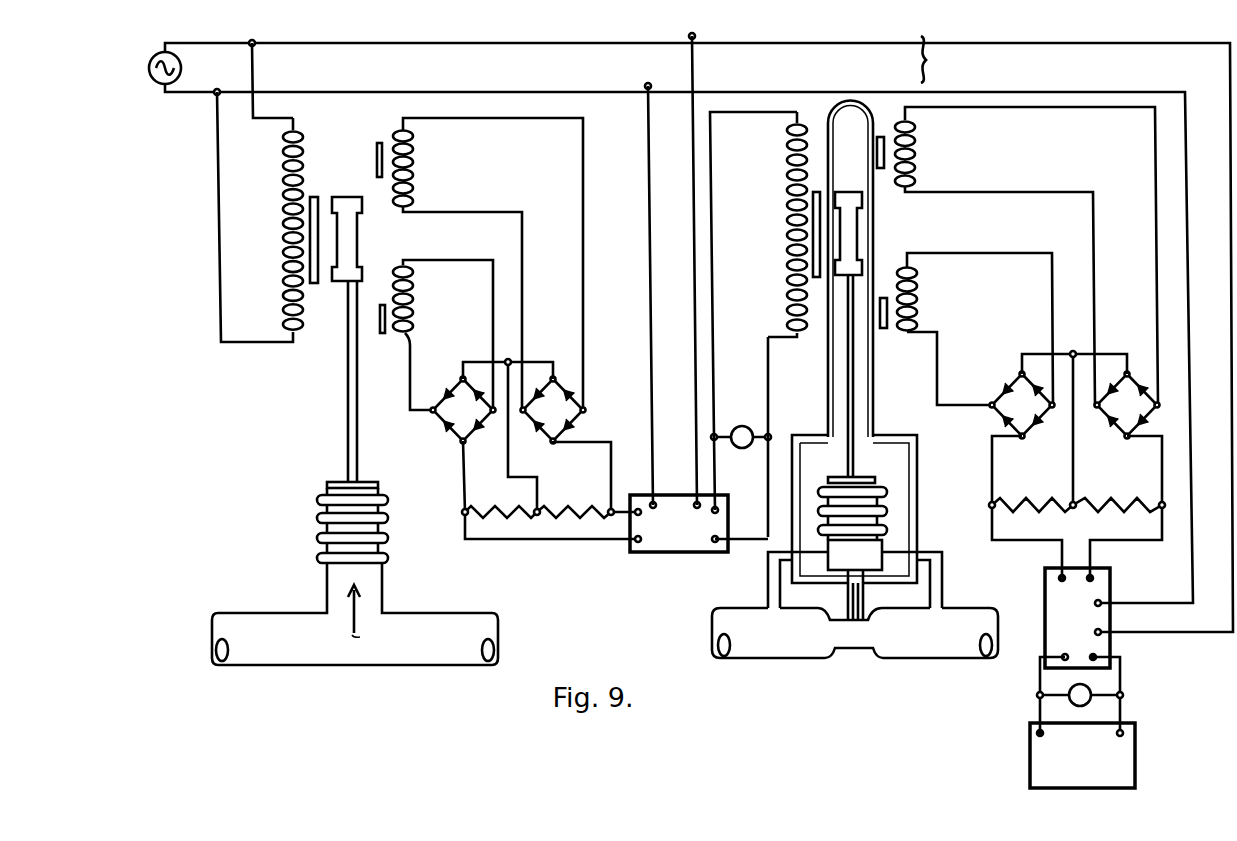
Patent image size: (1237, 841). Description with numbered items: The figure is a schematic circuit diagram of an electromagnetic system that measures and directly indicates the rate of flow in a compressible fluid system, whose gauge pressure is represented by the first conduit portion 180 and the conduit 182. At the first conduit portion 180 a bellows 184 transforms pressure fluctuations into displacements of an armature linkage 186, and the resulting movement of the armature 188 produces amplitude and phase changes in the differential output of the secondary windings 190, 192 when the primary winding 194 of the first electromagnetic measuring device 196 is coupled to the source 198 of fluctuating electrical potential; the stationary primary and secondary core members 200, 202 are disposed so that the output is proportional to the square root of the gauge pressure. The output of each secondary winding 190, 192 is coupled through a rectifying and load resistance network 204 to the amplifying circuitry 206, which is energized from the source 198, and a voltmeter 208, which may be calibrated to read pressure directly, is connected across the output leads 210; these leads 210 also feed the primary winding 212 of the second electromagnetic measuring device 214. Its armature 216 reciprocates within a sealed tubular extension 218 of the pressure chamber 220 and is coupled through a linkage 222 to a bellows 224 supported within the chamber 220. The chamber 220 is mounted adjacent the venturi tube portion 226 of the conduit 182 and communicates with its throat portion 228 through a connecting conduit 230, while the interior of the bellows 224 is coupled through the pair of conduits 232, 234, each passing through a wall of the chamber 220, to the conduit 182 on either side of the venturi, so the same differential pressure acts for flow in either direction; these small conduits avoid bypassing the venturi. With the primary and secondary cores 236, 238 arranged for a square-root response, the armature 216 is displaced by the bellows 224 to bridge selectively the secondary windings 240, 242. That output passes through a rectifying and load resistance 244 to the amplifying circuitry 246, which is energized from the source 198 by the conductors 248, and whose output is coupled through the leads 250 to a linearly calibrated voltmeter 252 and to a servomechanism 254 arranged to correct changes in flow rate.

The first conduit portion 180 is at (283, 665).
The conduit 182 is at (768, 658).
The bellows 184 is at (388, 516).
The armature linkage 186 is at (348, 423).
The armature 188 is at (351, 197).
The secondary winding 190 is at (413, 187).
The secondary winding 192 is at (413, 302).
The primary winding 194 is at (283, 188).
The first electromagnetic measuring device 196 is at (292, 371).
The source of fluctuating electrical potential 198 is at (160, 82).
The primary core member 200 is at (316, 283).
The secondary core members 202 is at (377, 150).
The rectifying and load resistance network 204 is at (418, 456).
The amplifying circuitry 206 is at (677, 553).
The voltmeter 208 is at (749, 448).
The output leads 210 is at (766, 400).
The primary winding 212 is at (787, 165).
The second electromagnetic measuring device 214 is at (882, 364).
The armature 216 is at (855, 231).
The sealed tubular extension 218 is at (859, 106).
The pressure chamber 220 is at (890, 435).
The linkage 222 is at (848, 405).
The bellows 224 is at (859, 509).
The venturi tube portion 226 is at (830, 657).
The throat portion 228 is at (871, 659).
The connecting conduit 230 is at (863, 595).
The conduit 232 is at (768, 585).
The conduit 234 is at (942, 585).
The primary core 236 is at (813, 226).
The secondary cores 238 is at (877, 153).
The secondary winding 240 is at (915, 160).
The secondary winding 242 is at (915, 294).
The rectifying and load resistance 244 is at (1097, 463).
The amplifying circuitry 246 is at (1110, 585).
The conductors 248 is at (947, 59).
The leads 250 is at (1040, 683).
The linearly calibrated voltmeter 252 is at (1090, 701).
The servomechanism 254 is at (1135, 760).